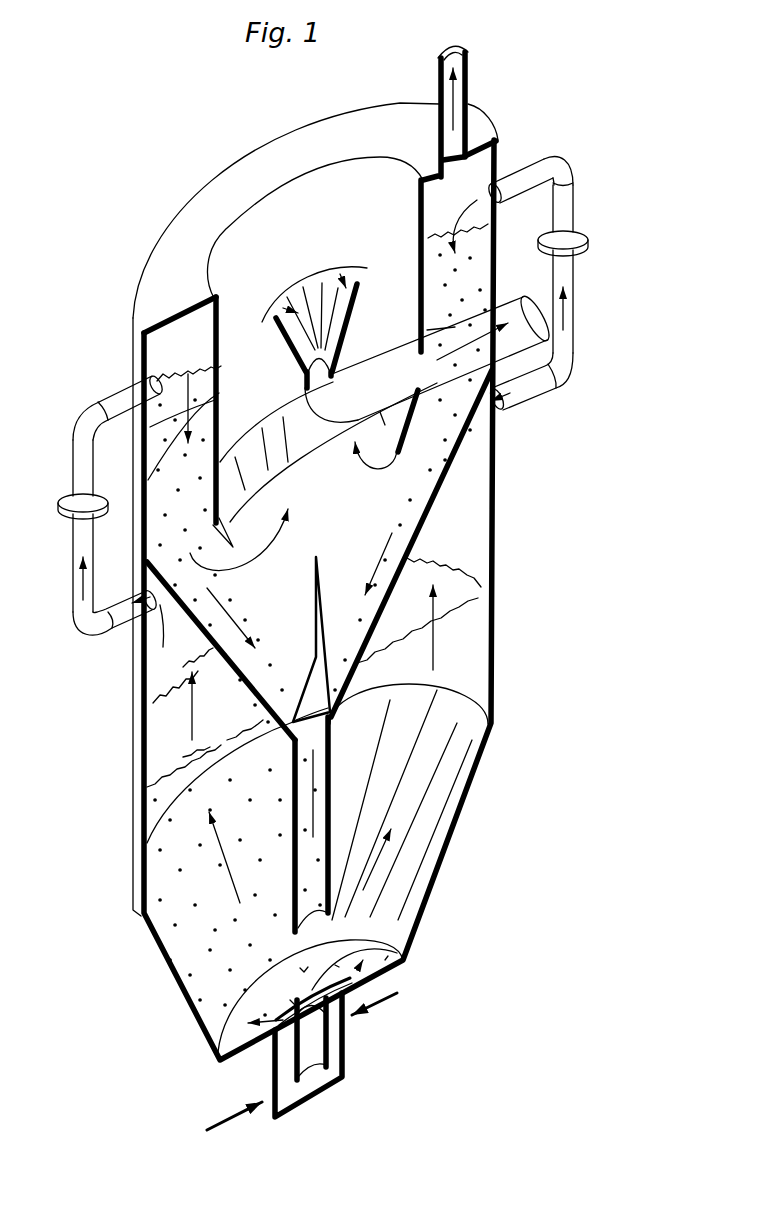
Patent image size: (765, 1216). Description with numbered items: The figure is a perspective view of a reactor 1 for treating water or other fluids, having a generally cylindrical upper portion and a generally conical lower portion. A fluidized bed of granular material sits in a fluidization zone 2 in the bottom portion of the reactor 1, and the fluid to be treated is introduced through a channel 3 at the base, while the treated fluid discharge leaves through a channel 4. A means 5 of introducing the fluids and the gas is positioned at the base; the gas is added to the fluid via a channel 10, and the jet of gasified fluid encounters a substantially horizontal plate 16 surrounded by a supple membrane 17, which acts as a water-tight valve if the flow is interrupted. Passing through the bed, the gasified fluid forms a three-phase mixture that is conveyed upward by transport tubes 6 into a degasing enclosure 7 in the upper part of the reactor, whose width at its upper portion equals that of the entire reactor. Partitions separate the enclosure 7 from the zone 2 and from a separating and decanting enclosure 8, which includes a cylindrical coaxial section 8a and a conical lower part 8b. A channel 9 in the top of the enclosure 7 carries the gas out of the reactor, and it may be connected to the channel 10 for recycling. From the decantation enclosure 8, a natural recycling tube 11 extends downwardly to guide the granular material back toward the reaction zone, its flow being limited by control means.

The reactor 1 is at (493, 574).
The fluidization zone 2 is at (170, 733).
The channel 3 is at (232, 1117).
The channel 4 is at (532, 340).
The means of introducing the fluids 5 is at (377, 947).
The transport tubes 6 is at (574, 297).
The degasing enclosure 7 is at (193, 475).
The separating and decanting enclosure 8 is at (333, 473).
The cylindrical coaxial section 8a is at (217, 347).
The inclined deflector plate 8b is at (427, 518).
The channel 9 is at (468, 65).
The channel 10 is at (377, 998).
The natural recycling tube 11 is at (331, 777).
The plate 16 is at (309, 990).
The supple membrane 17 is at (315, 996).